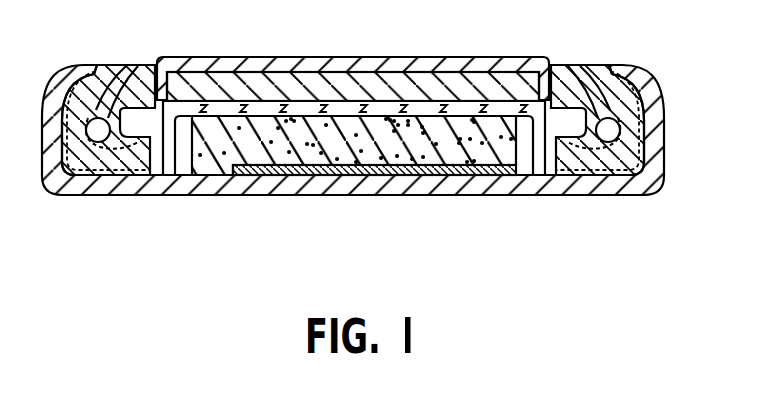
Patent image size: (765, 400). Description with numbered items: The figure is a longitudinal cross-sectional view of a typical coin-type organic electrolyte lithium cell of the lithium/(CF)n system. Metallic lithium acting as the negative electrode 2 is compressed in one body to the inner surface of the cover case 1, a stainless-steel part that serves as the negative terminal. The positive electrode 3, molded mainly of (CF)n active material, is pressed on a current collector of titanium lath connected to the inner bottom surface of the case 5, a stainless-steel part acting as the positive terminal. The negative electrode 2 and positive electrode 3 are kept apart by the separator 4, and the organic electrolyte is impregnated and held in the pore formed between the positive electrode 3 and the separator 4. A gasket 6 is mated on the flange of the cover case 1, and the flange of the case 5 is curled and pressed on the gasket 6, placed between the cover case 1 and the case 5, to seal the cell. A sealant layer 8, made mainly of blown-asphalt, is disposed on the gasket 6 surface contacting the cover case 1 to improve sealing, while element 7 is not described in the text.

The cover case 1 is at (225, 66).
The negative electrode 2 is at (272, 80).
The positive electrode 3 is at (415, 125).
The separator 4 is at (352, 110).
The case 5 is at (170, 183).
The gasket 6 is at (590, 67).
The current collector 7 is at (377, 196).
The sealant layer 8 is at (612, 174).